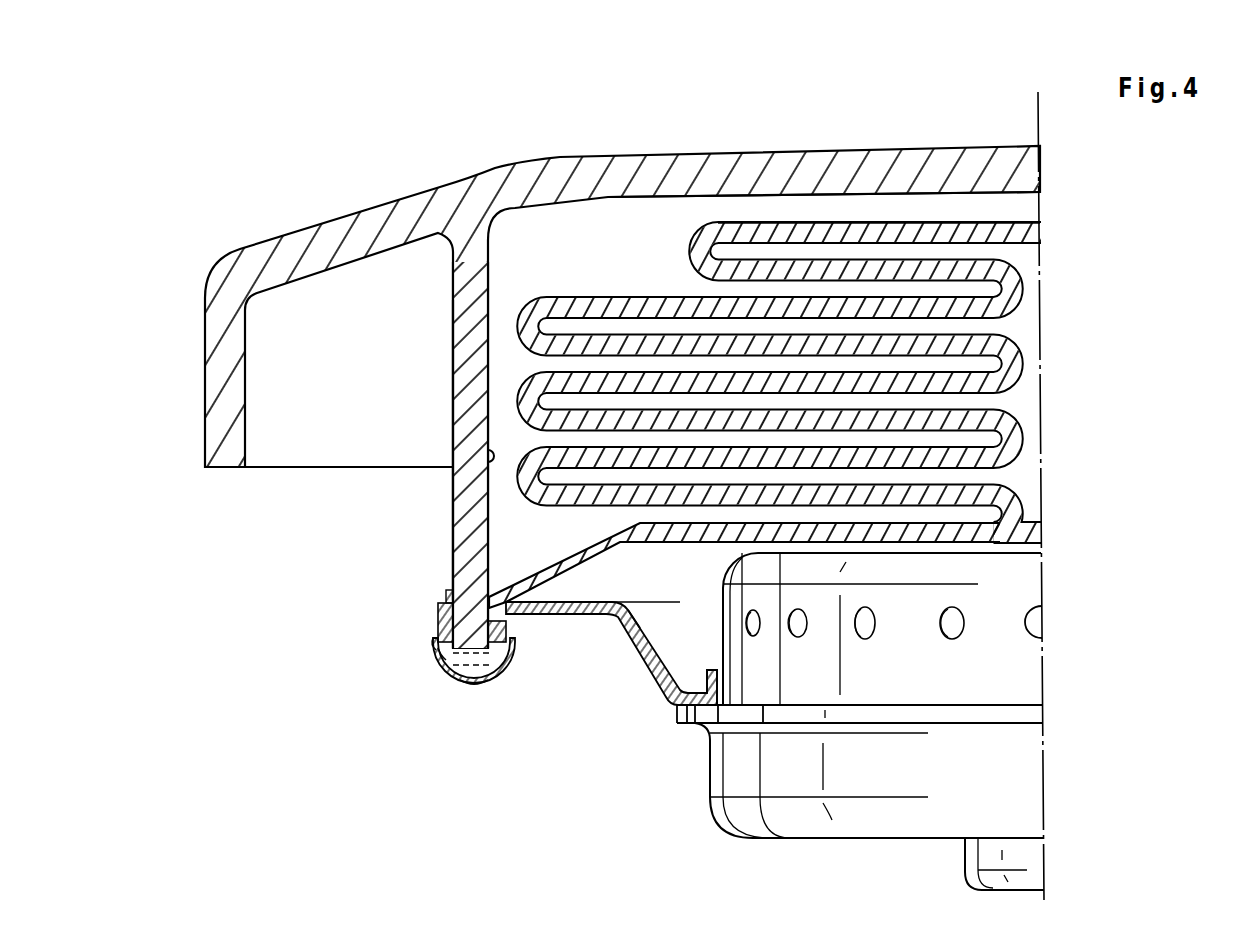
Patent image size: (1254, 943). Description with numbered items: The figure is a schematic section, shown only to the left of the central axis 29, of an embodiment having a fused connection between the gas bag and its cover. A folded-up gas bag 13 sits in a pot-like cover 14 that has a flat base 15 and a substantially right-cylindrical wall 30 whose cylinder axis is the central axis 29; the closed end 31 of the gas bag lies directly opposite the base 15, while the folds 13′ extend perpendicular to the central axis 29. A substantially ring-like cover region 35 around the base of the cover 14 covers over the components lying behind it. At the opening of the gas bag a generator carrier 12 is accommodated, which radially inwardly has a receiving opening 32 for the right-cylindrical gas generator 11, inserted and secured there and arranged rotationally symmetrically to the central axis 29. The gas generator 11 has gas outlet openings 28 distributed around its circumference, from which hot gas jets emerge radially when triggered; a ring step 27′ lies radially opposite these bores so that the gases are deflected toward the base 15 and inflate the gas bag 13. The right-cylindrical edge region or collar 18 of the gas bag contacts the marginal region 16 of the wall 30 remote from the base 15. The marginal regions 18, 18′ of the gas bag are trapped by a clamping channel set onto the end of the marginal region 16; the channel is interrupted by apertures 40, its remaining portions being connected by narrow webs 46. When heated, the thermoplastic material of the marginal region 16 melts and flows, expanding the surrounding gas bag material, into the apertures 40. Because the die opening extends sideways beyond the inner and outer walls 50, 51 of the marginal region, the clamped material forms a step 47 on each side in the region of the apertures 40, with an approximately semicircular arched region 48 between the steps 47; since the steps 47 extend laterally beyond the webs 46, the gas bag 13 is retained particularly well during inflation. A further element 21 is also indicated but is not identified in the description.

The gas generator 11 is at (1005, 770).
The generator carrier 12 is at (648, 687).
The gas bag 13 is at (1024, 268).
The folds 13′ is at (585, 380).
The pot-like cover 14 is at (598, 152).
The flat base 15 is at (752, 163).
The marginal region 16 is at (482, 598).
The edge region or collar 18 is at (506, 628).
The marginal region of the gas bag 18′ is at (447, 592).
The bead 21 is at (478, 684).
The ring step 27′ is at (648, 637).
The gas outlet openings 28 is at (944, 628).
The central axis 29 is at (1032, 110).
The right-cylindrical wall 30 is at (466, 352).
The closed end of the gas bag 31 is at (876, 224).
The receiving opening 32 is at (712, 676).
The ring-like cover region 35 is at (315, 240).
The apertures 40 is at (435, 664).
The narrow webs 46 is at (440, 618).
The step 47 is at (438, 640).
The arched region 48 is at (462, 684).
The inner wall 50 is at (490, 462).
The outer wall 51 is at (456, 430).